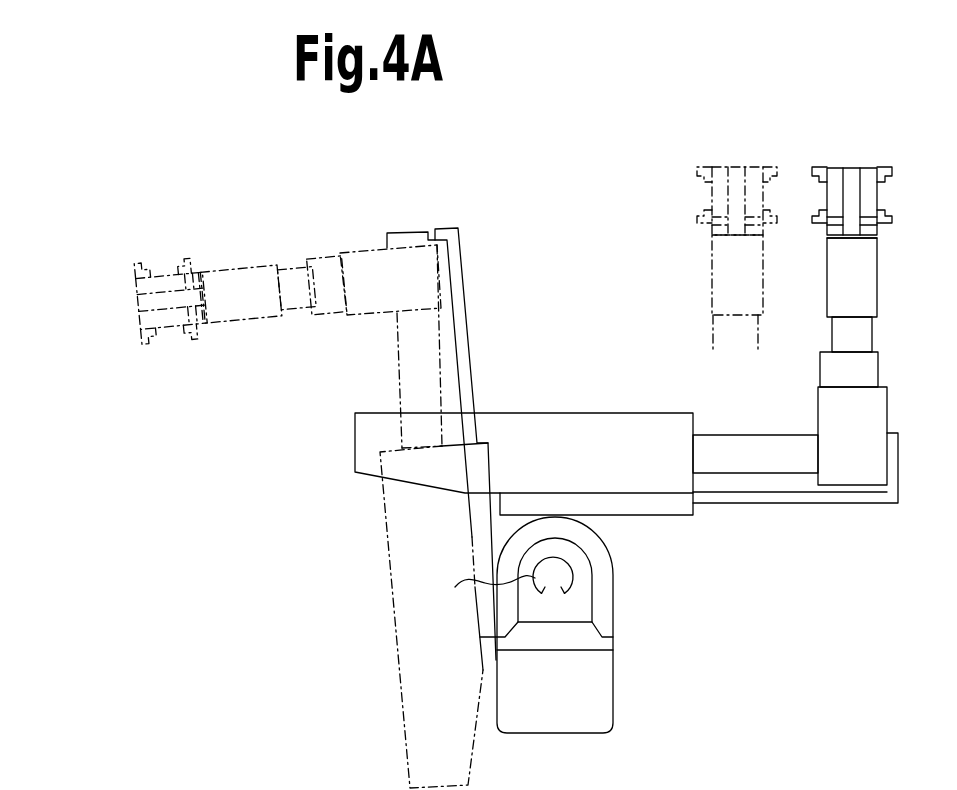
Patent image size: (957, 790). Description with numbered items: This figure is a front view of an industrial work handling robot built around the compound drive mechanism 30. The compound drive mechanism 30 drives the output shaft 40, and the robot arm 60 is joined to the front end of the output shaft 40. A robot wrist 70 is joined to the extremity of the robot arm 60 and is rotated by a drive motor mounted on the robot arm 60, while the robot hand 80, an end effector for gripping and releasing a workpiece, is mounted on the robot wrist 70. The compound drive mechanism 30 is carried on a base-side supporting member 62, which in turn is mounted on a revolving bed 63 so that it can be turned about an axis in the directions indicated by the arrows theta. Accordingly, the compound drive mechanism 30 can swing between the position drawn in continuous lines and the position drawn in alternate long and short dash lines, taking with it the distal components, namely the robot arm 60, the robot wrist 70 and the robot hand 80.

The compound drive mechanism 30 is at (380, 603).
The output shaft 40 is at (398, 365).
The robot arm 60 is at (823, 413).
The supporting member 62 is at (593, 522).
The revolving bed 63 is at (595, 680).
The robot wrist 70 is at (252, 267).
The robot hand 80 is at (162, 272).